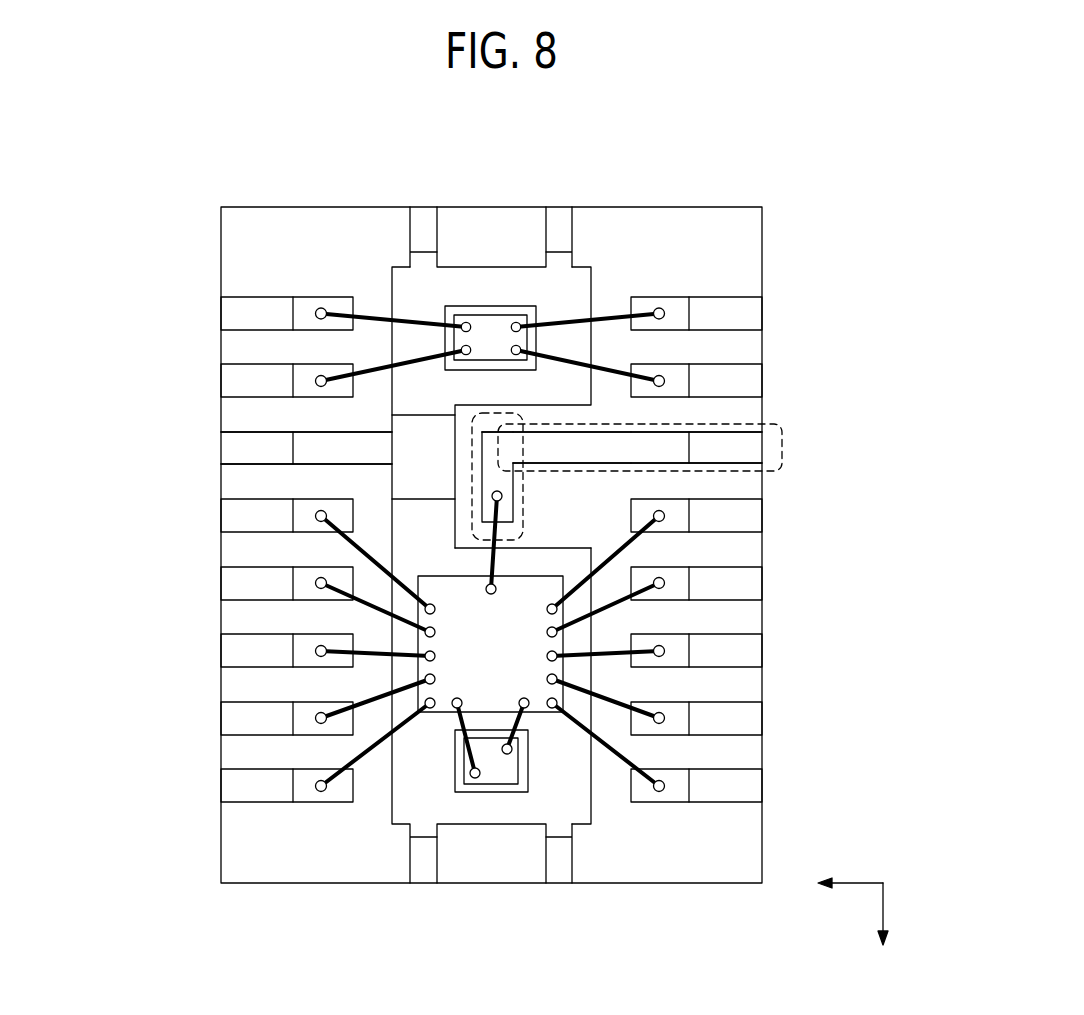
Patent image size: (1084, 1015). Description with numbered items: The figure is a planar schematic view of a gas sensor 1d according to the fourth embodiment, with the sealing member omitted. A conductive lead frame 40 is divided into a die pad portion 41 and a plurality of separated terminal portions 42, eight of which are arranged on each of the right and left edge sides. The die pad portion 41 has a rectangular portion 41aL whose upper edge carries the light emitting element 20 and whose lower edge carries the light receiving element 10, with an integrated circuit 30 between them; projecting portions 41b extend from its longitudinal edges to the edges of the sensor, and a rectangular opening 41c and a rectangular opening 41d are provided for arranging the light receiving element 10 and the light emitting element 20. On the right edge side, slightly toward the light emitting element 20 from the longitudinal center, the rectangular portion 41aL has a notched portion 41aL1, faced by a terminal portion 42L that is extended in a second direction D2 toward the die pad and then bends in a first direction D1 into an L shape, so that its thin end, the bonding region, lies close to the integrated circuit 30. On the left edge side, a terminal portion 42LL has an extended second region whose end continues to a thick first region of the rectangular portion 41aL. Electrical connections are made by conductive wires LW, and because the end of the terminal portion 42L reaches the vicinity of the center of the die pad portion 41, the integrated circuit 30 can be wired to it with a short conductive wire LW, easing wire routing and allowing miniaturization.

The gas sensor 1d is at (706, 180).
The light receiving element 10 is at (492, 770).
The light emitting element 20 is at (490, 338).
The integrated circuit 30 is at (530, 668).
The conductive lead frame 40 is at (378, 943).
The die pad portion 41 is at (400, 813).
The projecting portion 41b is at (425, 227).
The rectangular opening 41c is at (516, 310).
The rectangular opening 41d is at (507, 787).
The rectangular portion 41aL is at (467, 283).
The notched portion 41aL1 is at (582, 547).
The terminal portion 42 is at (259, 790).
The terminal portion 42L is at (745, 448).
The terminal portion 42LL is at (243, 453).
The conductive wire LW is at (607, 313).
The first direction D1 is at (897, 914).
The second direction D2 is at (850, 872).